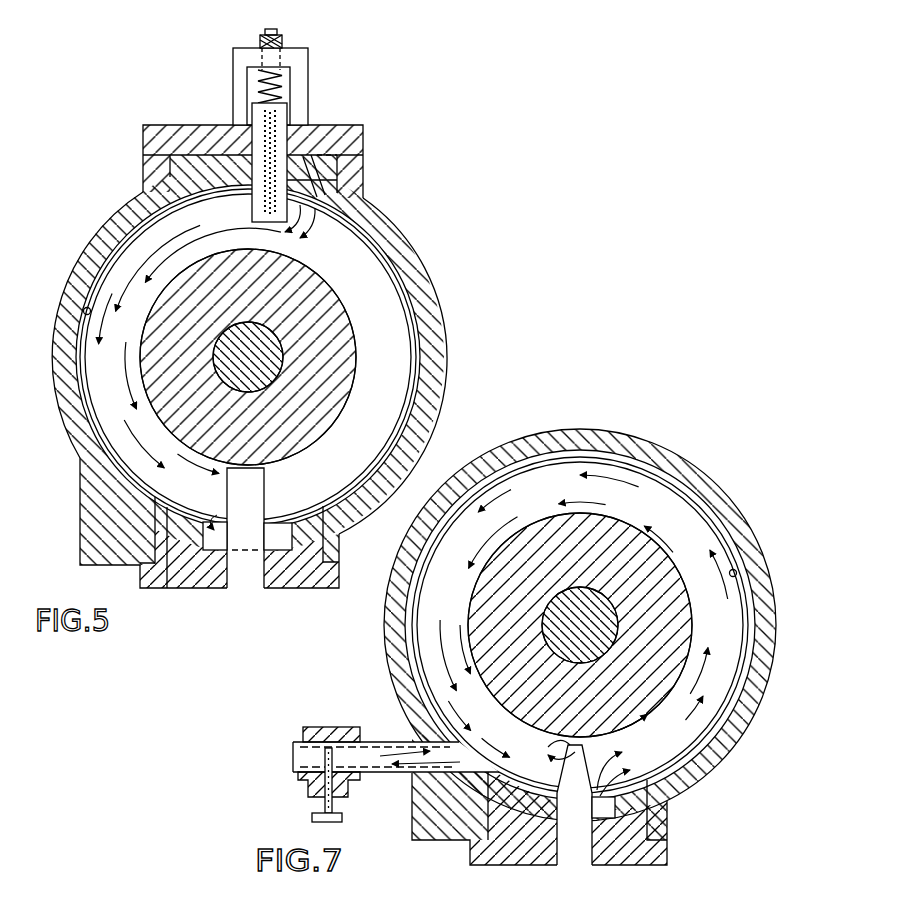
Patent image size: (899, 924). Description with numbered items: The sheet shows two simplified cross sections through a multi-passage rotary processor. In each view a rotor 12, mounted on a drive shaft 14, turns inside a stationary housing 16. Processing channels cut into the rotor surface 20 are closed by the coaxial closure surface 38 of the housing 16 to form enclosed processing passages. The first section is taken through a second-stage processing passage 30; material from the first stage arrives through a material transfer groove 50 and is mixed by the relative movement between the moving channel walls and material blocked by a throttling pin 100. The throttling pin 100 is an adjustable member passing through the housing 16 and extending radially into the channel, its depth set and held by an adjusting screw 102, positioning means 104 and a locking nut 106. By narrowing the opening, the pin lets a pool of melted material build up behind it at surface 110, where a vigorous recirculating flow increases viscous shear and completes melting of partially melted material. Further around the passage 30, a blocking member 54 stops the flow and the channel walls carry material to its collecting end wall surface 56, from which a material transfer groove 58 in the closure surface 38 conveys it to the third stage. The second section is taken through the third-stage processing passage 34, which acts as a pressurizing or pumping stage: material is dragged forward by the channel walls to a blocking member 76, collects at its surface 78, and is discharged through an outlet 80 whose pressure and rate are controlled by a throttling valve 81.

In FIG. 5, the rotor 12 is at (352, 400).
In FIG. 7, the rotor 12 is at (468, 610).
In FIG. 5, the drive shaft 14 is at (270, 357).
In FIG. 7, the drive shaft 14 is at (606, 637).
In FIG. 5, the housing 16 is at (120, 222).
In FIG. 7, the housing 16 is at (746, 515).
In FIG. 5, the rotor surface 20 is at (78, 358).
In FIG. 7, the rotor surface 20 is at (404, 655).
In FIG. 5, the processing passage 30 is at (113, 272).
In FIG. 7, the processing passage 34 is at (728, 681).
In FIG. 5, the coaxial closure surface 38 is at (83, 312).
In FIG. 7, the coaxial closure surface 38 is at (736, 571).
In FIG. 5, the material transfer groove 50 is at (297, 165).
In FIG. 5, the blocking member 54 is at (244, 577).
In FIG. 5, the end wall surface 56 is at (227, 500).
In FIG. 5, the material transfer groove 58 is at (221, 545).
In FIG. 7, the material transfer groove 58 is at (604, 816).
In FIG. 7, the blocking member 76 is at (569, 850).
In FIG. 7, the surface 78 is at (556, 748).
In FIG. 7, the outlet 80 is at (432, 757).
In FIG. 7, the throttling valve 81 is at (313, 816).
In FIG. 5, the throttling pin 100 is at (252, 112).
In FIG. 5, the adjusting screw 102 is at (258, 82).
In FIG. 5, the positioning means 104 is at (234, 67).
In FIG. 5, the locking nut 106 is at (258, 46).
In FIG. 5, the surface 110 is at (290, 171).